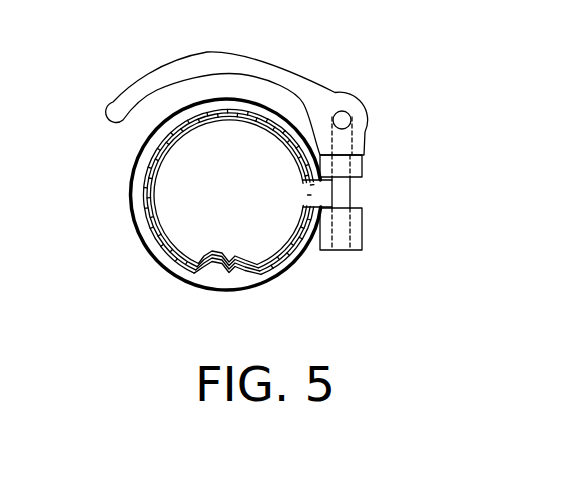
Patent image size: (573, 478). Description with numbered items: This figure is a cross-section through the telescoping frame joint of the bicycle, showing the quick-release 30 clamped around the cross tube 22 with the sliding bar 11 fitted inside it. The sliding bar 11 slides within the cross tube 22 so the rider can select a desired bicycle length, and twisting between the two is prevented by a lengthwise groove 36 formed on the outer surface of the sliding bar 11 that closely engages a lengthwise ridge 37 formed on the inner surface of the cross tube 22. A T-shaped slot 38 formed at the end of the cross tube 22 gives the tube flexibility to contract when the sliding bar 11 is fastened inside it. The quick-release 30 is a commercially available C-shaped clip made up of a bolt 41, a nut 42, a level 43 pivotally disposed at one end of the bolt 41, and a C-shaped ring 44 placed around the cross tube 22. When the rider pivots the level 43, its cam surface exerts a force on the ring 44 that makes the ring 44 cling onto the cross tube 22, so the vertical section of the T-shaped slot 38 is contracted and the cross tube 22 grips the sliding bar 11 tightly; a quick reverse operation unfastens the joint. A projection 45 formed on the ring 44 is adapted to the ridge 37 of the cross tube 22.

The quick-release 30 is at (255, 172).
The level 43 is at (293, 72).
The C-shaped ring 44 is at (141, 153).
The bolt 41 is at (345, 143).
The T-shaped slot 38 is at (333, 192).
The nut 42 is at (362, 237).
The cross tube 22 is at (148, 210).
The sliding bar 11 is at (172, 238).
The lengthwise groove 36 is at (201, 258).
The lengthwise ridge 37 is at (220, 268).
The projection 45 is at (229, 272).